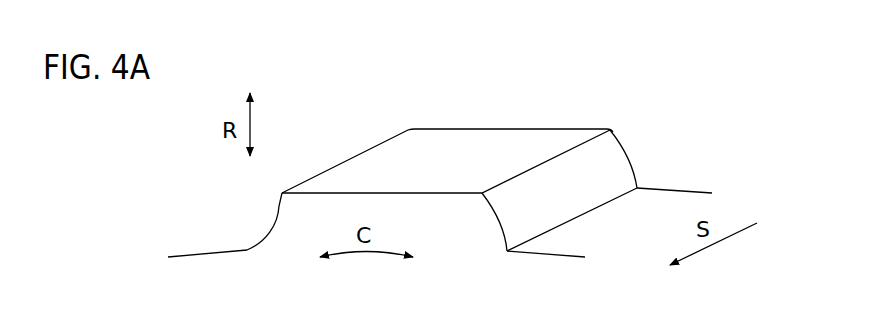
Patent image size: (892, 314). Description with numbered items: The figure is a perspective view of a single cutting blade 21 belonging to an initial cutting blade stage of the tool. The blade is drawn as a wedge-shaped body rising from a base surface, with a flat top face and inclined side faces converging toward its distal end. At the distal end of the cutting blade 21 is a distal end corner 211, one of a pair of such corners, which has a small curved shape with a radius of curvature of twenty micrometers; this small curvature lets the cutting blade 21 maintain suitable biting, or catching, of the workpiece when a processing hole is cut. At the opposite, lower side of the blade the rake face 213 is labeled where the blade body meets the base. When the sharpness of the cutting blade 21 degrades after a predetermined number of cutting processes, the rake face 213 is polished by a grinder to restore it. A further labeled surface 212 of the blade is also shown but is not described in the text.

The cutting blade 21 is at (641, 139).
The distal end corner 211 is at (533, 162).
The top face 212 is at (453, 152).
The rake face 213 is at (293, 232).